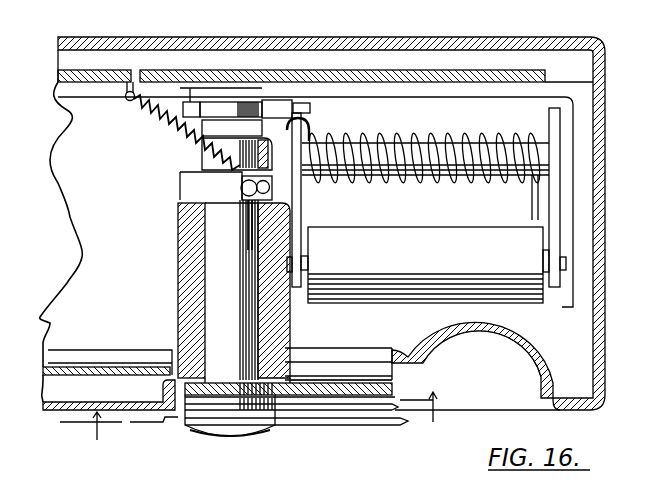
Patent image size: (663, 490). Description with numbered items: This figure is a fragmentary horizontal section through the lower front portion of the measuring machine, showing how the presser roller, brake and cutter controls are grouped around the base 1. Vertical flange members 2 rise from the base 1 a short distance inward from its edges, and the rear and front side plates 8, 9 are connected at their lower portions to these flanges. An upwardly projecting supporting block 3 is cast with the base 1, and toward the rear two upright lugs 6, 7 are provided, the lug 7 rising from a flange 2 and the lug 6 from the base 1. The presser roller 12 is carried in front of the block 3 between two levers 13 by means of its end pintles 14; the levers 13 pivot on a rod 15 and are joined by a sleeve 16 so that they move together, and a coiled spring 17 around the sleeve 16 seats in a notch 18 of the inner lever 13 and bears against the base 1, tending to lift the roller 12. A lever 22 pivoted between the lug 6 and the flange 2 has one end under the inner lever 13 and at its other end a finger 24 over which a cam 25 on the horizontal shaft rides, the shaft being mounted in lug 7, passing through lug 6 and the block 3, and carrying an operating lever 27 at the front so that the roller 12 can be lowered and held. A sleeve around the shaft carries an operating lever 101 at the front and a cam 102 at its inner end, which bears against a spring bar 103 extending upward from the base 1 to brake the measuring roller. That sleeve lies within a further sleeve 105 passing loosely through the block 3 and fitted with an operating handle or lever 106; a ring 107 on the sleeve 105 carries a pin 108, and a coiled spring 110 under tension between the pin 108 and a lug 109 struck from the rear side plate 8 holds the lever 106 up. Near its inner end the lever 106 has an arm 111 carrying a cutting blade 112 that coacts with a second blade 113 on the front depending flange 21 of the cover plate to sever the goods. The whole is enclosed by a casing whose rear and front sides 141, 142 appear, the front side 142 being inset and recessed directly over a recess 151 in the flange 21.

The base 1 is at (72, 200).
The vertical flange members 2 is at (70, 357).
The supporting block 3 is at (182, 268).
The upright lug 6 is at (215, 128).
The upright lug 7 is at (250, 90).
The rear side plate 8 is at (100, 82).
The front side plate 9 is at (72, 375).
The presser roller 12 is at (378, 304).
The levers 13 is at (305, 211).
The end pintles 14 is at (308, 262).
The rod 15 is at (568, 155).
The sleeve 16 is at (448, 181).
The coiled spring 17 is at (413, 184).
The notch 18 is at (311, 125).
The flanges 21 is at (488, 38).
The lever 22 is at (284, 106).
The finger 24 is at (160, 116).
The cam 25 is at (229, 103).
The operating lever 27 is at (352, 427).
The operating lever 101 is at (323, 414).
The cam 102 is at (205, 165).
The spring bar 103 is at (268, 160).
The sleeve 105 is at (215, 313).
The operating handle or lever 106 is at (242, 396).
The ring 107 is at (185, 188).
The pin 108 is at (250, 206).
The lug 109 is at (130, 101).
The coiled spring 110 is at (205, 150).
The arm 111 is at (380, 390).
The cutting blade 112 is at (395, 383).
The second blade 113 is at (338, 363).
The rear side of casing 141 is at (200, 36).
The front side of casing 142 is at (118, 406).
The recess 151 is at (485, 332).